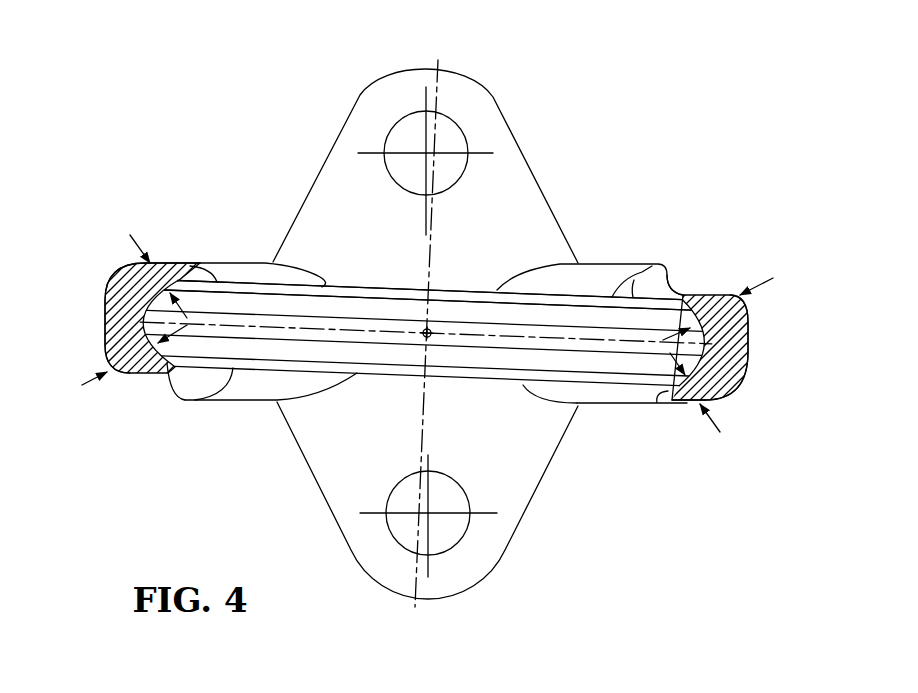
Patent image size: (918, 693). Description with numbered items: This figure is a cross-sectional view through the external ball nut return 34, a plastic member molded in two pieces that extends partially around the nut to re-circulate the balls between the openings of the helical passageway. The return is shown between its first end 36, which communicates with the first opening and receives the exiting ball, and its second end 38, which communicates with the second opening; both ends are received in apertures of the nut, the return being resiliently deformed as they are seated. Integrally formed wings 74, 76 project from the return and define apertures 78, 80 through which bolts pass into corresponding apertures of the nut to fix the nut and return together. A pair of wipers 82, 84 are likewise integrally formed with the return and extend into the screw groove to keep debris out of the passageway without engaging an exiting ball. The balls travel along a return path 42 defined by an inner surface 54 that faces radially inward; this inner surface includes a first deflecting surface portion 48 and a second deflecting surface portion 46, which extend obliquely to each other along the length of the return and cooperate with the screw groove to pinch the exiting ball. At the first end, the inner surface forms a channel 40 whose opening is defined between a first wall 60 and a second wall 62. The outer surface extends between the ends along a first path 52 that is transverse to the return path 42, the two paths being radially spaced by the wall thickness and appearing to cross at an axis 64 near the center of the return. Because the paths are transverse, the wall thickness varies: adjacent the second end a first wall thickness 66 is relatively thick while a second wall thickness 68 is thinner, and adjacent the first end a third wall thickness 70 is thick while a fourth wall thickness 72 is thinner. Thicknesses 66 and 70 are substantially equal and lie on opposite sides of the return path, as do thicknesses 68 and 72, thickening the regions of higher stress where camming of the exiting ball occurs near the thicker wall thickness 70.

The external ball nut return 34 is at (596, 168).
The first end 36 is at (718, 289).
The second end 38 is at (123, 378).
The channel 40 is at (262, 158).
The return path 42 is at (267, 320).
The second deflecting surface portion 46 is at (583, 307).
The first deflecting surface portion 48 is at (572, 404).
The first path 52 is at (303, 337).
The inner surface 54 is at (468, 285).
The first wall 60 is at (632, 386).
The second wall 62 is at (660, 306).
The axis 64 is at (427, 335).
The first wall thickness 66 is at (112, 333).
The second wall thickness 68 is at (150, 287).
The third wall thickness 70 is at (749, 340).
The fourth wall thickness 72 is at (686, 404).
The wing 74 is at (360, 92).
The wing 76 is at (527, 510).
The aperture 78 is at (463, 140).
The aperture 80 is at (452, 522).
The wiper 82 is at (186, 388).
The wiper 84 is at (638, 283).